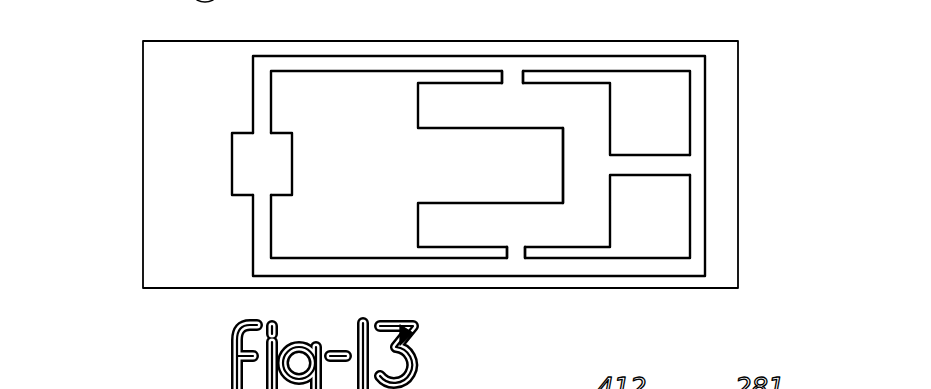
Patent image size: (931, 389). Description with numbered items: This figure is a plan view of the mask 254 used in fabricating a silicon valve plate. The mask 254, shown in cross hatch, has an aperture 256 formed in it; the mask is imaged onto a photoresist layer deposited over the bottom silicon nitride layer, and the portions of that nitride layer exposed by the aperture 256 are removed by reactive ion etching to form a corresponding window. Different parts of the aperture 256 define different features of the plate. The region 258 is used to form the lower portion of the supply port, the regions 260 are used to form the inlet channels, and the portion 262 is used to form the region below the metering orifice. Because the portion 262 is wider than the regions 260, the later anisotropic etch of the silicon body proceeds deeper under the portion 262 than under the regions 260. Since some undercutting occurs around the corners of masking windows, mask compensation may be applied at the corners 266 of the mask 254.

The mask 254 is at (723, 97).
The aperture 256 is at (598, 63).
The region of aperture 258 is at (243, 164).
The regions of aperture 260 is at (437, 62).
The portion of aperture 262 is at (563, 232).
The corners of mask 266 is at (250, 132).